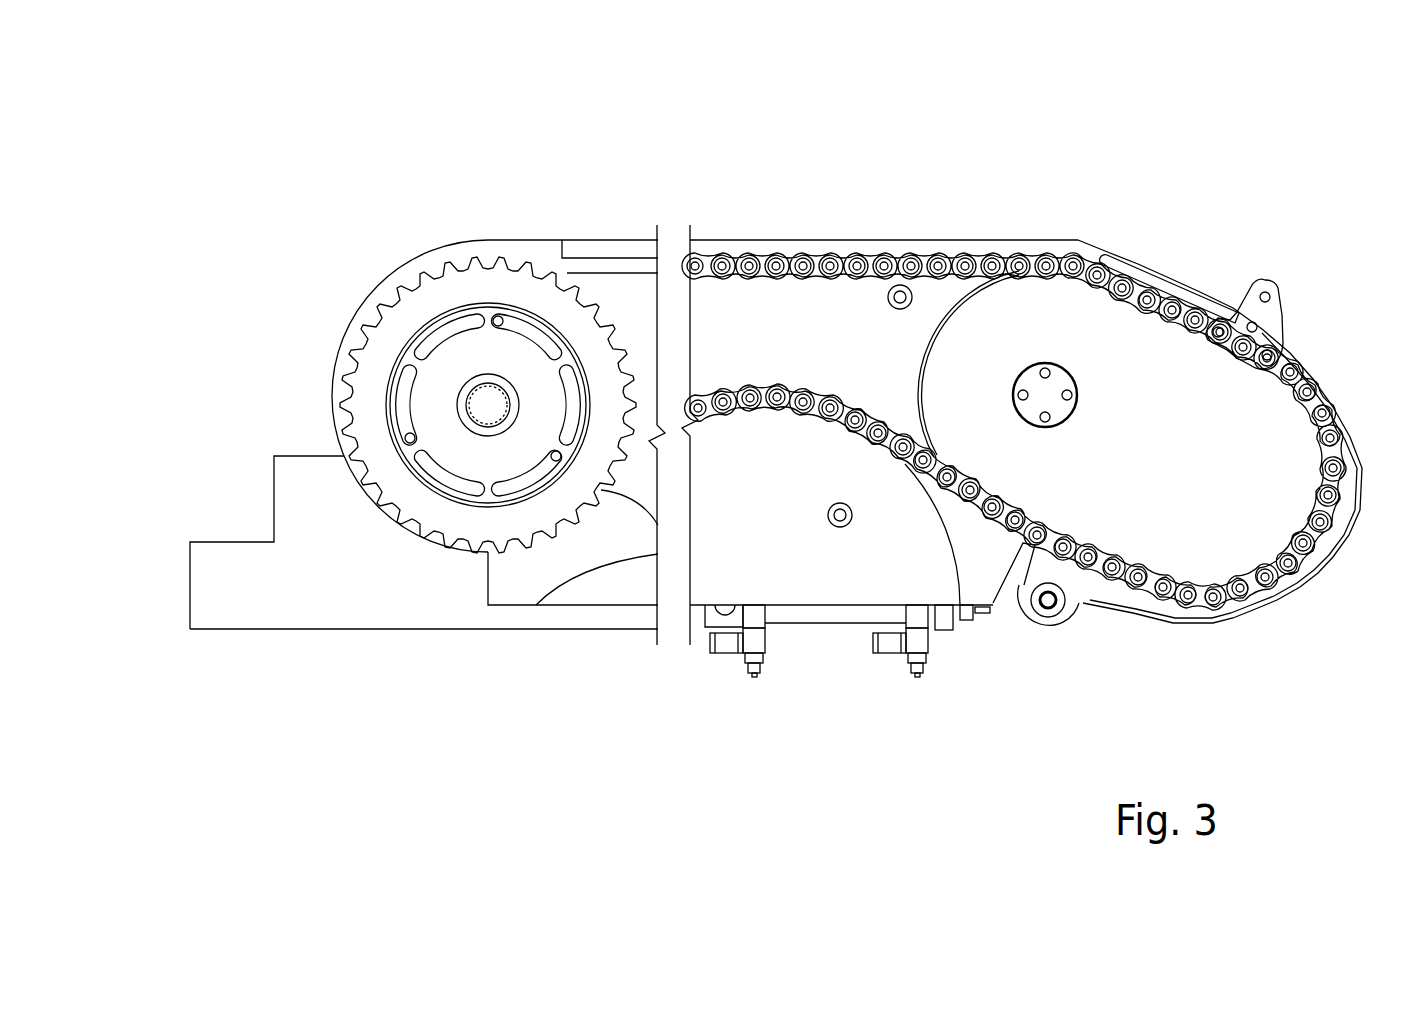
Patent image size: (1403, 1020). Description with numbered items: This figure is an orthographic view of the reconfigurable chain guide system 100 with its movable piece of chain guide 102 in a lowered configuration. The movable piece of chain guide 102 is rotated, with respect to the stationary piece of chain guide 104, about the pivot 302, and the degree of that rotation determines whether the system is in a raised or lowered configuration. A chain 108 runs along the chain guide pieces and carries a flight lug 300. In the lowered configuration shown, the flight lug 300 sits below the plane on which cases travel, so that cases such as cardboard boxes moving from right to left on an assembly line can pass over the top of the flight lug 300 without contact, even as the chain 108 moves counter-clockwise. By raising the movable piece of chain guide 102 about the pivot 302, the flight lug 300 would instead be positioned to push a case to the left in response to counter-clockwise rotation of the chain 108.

The reconfigurable chain guide system 100 is at (1113, 117).
The movable piece of chain guide 102 is at (1143, 265).
The stationary piece of chain guide 104 is at (815, 238).
The chain 108 is at (735, 257).
The flight lug 300 is at (1262, 280).
The pivot 302 is at (1035, 360).